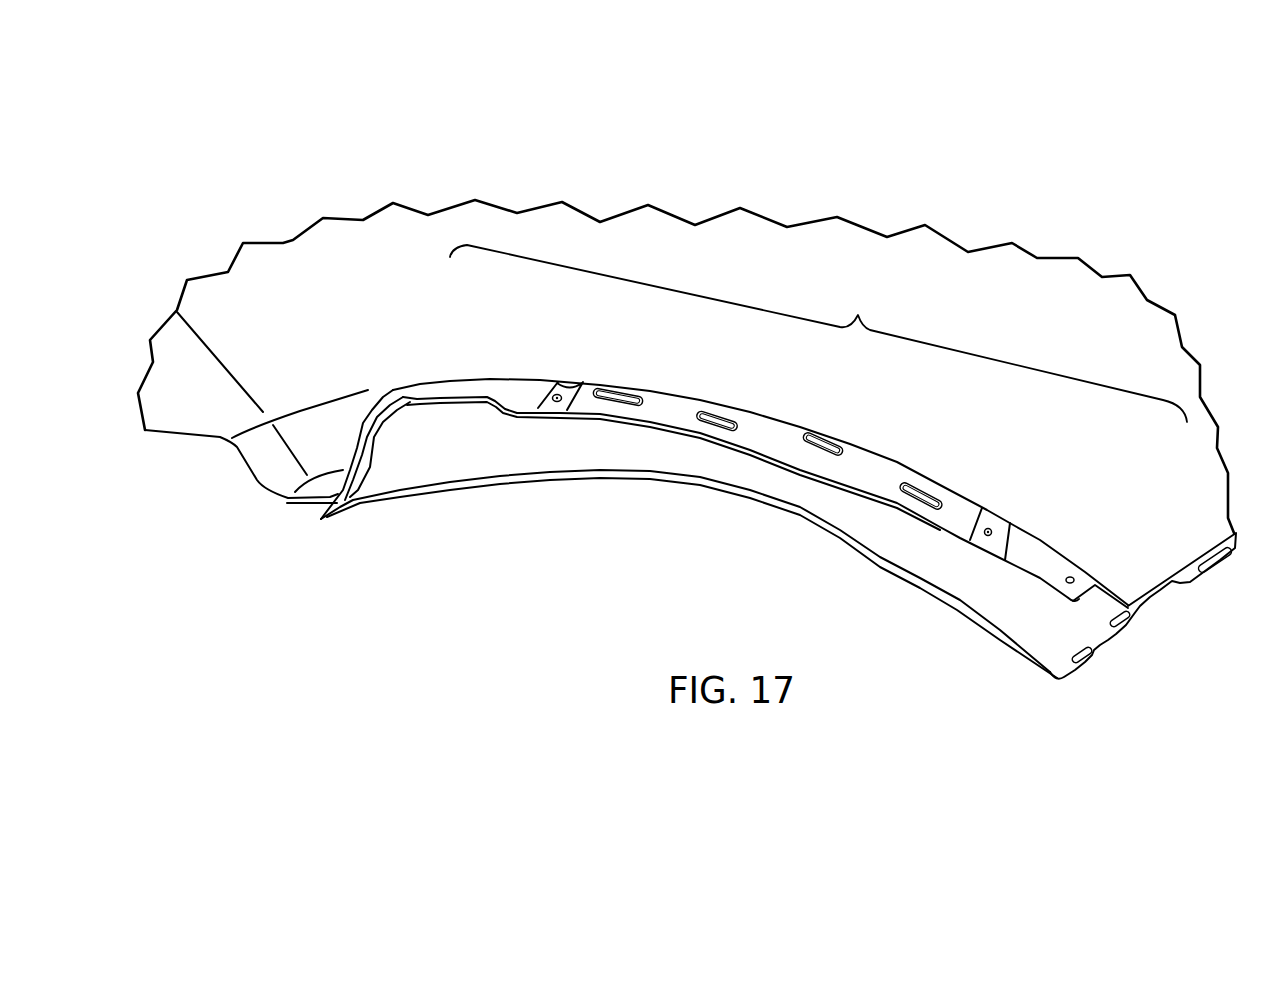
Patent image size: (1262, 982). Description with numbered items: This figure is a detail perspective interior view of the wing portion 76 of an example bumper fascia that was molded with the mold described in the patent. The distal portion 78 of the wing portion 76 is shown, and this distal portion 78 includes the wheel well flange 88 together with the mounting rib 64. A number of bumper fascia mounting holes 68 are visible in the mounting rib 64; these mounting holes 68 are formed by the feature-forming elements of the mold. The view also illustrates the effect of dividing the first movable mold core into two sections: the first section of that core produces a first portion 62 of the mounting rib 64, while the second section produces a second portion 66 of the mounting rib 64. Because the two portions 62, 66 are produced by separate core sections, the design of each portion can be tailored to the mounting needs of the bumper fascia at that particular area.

The wing portion 76 is at (686, 281).
The distal portion 78 is at (732, 262).
The first portion 62 is at (818, 333).
The mounting rib 64 is at (724, 479).
The second portion 66 is at (213, 428).
The bumper fascia mounting holes 68 is at (830, 432).
The wheel well flange 88 is at (910, 585).